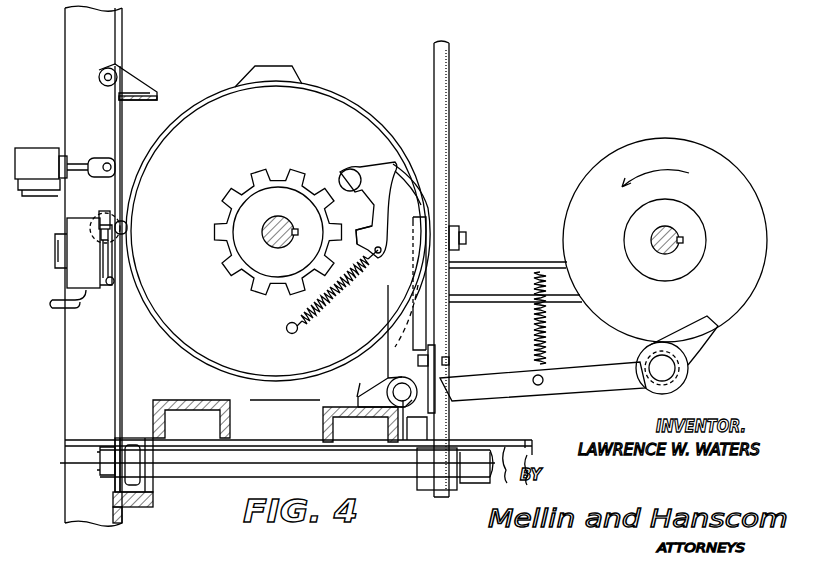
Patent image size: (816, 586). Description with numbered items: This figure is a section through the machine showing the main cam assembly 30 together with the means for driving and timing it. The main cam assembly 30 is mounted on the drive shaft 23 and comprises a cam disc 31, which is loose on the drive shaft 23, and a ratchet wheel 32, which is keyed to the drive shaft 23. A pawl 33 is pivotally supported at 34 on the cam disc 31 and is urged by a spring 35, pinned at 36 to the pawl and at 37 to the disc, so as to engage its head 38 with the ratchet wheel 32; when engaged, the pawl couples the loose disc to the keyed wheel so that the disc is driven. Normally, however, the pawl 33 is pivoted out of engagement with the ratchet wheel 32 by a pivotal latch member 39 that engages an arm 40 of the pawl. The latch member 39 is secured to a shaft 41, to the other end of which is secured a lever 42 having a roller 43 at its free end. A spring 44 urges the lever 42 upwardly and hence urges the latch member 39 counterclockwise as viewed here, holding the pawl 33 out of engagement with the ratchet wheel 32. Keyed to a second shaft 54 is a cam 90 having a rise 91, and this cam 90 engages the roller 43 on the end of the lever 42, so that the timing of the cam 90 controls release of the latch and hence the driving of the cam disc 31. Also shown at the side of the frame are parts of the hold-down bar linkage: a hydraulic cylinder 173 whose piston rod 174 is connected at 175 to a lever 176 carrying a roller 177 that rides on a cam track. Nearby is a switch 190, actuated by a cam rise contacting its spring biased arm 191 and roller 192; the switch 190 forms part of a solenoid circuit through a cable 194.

The drive shaft 23 is at (262, 233).
The main cam assembly 30 is at (323, 57).
The cam disc 31 is at (285, 121).
The ratchet wheel 32 is at (248, 181).
The pawl 33 is at (351, 169).
The pivot 34 is at (355, 169).
The spring 35 is at (316, 310).
The pin 36 is at (378, 256).
The pin 37 is at (294, 334).
The head 38 is at (360, 221).
The latch member 39 is at (417, 212).
The arm 40 is at (388, 158).
The shaft 41 is at (390, 404).
The lever 42 is at (570, 389).
The roller 43 is at (688, 372).
The spring 44 is at (548, 344).
The shaft 54 is at (651, 240).
The cam 90 is at (736, 166).
The rise 91 is at (712, 340).
The hydraulic cylinder 173 is at (48, 148).
The piston rod 174 is at (95, 158).
The connection 175 is at (119, 153).
The lever 176 is at (115, 105).
The roller 177 is at (102, 212).
The switch 190 is at (95, 272).
The spring biased arm 191 is at (120, 270).
The roller 192 is at (126, 222).
The cable 194 is at (70, 311).